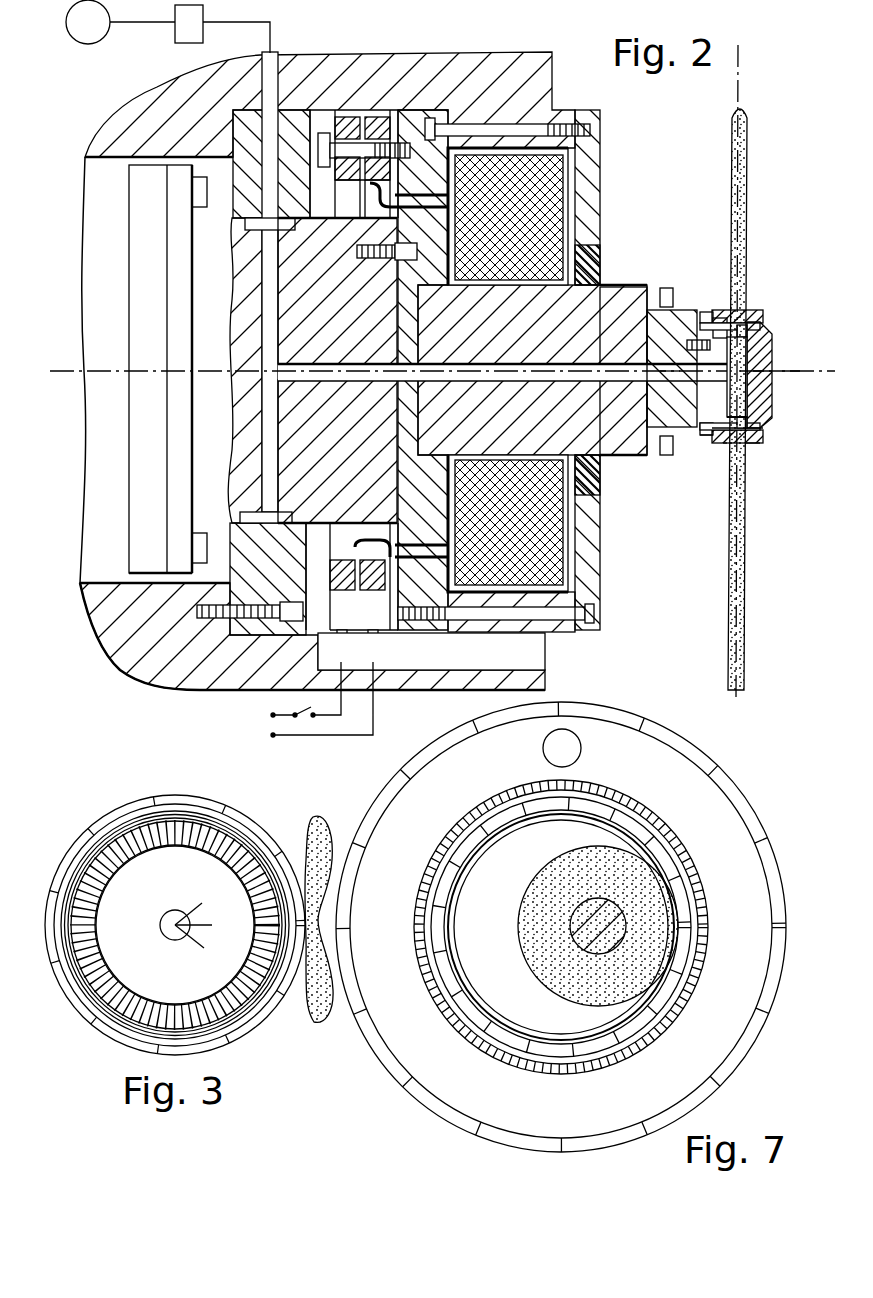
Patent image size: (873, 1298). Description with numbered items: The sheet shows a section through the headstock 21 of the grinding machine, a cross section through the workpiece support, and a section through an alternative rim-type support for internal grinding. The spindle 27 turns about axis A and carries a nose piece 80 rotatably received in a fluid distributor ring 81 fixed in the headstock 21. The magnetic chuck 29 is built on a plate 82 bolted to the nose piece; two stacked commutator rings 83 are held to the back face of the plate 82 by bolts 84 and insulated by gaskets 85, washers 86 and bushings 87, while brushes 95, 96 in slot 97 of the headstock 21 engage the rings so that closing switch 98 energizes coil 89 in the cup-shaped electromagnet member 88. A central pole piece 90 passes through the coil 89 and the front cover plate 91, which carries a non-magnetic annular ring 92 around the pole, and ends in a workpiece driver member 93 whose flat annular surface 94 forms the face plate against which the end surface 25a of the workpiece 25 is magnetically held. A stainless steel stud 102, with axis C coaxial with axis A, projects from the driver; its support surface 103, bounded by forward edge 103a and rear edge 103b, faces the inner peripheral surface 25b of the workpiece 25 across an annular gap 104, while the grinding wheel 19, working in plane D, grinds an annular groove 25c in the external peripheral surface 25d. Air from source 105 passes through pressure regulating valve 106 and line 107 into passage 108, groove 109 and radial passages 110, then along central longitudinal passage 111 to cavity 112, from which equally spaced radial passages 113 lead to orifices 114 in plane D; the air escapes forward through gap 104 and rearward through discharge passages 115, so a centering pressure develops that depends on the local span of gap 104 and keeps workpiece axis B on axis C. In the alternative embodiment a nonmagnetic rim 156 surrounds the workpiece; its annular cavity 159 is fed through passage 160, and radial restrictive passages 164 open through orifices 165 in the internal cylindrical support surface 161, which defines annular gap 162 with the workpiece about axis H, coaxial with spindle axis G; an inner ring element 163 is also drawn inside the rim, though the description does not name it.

In FIG. 2, the grinding wheel 19 is at (748, 135).
In FIG. 3, the grinding wheel 19 is at (313, 820).
In FIG. 2, the headstock 21 is at (90, 134).
In FIG. 2, the workpiece 25 is at (748, 313).
In FIG. 3, the workpiece 25 is at (238, 805).
In FIG. 2, the end surface 25a is at (711, 442).
In FIG. 2, the inner peripheral surface 25b is at (719, 323).
In FIG. 2, the annular groove 25c is at (747, 453).
In FIG. 3, the annular groove 25c is at (264, 822).
In FIG. 2, the external peripheral surface 25d is at (724, 445).
In FIG. 2, the spindle 27 is at (146, 577).
In FIG. 2, the magnetic chuck 29 is at (618, 466).
In FIG. 2, the nose piece 80 is at (352, 435).
In FIG. 2, the fluid distributor ring 81 is at (233, 124).
In FIG. 2, the plate 82 is at (413, 120).
In FIG. 2, the commutator rings 83 is at (362, 157).
In FIG. 2, the bolts 84 is at (322, 135).
In FIG. 2, the insulating gaskets 85 is at (388, 150).
In FIG. 2, the insulating washers 86 is at (335, 160).
In FIG. 2, the insulating bushings 87 is at (391, 164).
In FIG. 2, the electromagnet member 88 is at (488, 117).
In FIG. 2, the coil 89 is at (529, 283).
In FIG. 2, the pole piece 90 is at (603, 290).
In FIG. 2, the front cover plate 91 is at (602, 178).
In FIG. 2, the annular ring 92 is at (598, 253).
In FIG. 2, the workpiece driver member 93 is at (683, 312).
In FIG. 2, the flat annular surface 94 is at (723, 310).
In FIG. 2, the brush 95 is at (335, 645).
In FIG. 2, the brush 96 is at (380, 655).
In FIG. 2, the slot 97 is at (534, 656).
In FIG. 2, the switch 98 is at (304, 711).
In FIG. 2, the cylindrical stud 102 is at (774, 347).
In FIG. 3, the cylindrical stud 102 is at (85, 871).
In FIG. 2, the support surface 103 is at (761, 445).
In FIG. 3, the support surface 103 is at (131, 822).
In FIG. 2, the forward edge 103a is at (763, 430).
In FIG. 2, the rear edge 103b is at (700, 428).
In FIG. 2, the annular gap 104 is at (766, 319).
In FIG. 2, the source 105 is at (89, 22).
In FIG. 2, the pressure regulating valve 106 is at (176, 35).
In FIG. 2, the line 107 is at (270, 30).
In FIG. 2, the passage 108 is at (262, 108).
In FIG. 2, the annular groove 109 is at (291, 231).
In FIG. 2, the radial passages 110 is at (278, 304).
In FIG. 2, the central longitudinal passage 111 is at (464, 385).
In FIG. 2, the cavity 112 is at (739, 357).
In FIG. 3, the cavity 112 is at (175, 925).
In FIG. 2, the radial passages 113 is at (746, 420).
In FIG. 3, the radial passages 113 is at (119, 978).
In FIG. 2, the orifices 114 is at (740, 318).
In FIG. 3, the orifices 114 is at (84, 997).
In FIG. 2, the discharge passages 115 is at (713, 312).
In FIG. 7, the rim 156 is at (642, 732).
In FIG. 7, the annular cavity 159 is at (483, 763).
In FIG. 7, the passage 160 is at (582, 748).
In FIG. 7, the internal cylindrical support surface 161 is at (498, 821).
In FIG. 7, the annular gap 162 is at (443, 866).
In FIG. 7, the inner ring 163 is at (451, 887).
In FIG. 7, the restrictive passages 164 is at (600, 784).
In FIG. 7, the orifices 165 is at (601, 790).
In FIG. 2, the axis of rotation A is at (56, 371).
In FIG. 3, the axis of rotation A is at (196, 908).
In FIG. 2, the central longitudinal axis B is at (781, 375).
In FIG. 3, the central longitudinal axis B is at (201, 926).
In FIG. 2, the central longitudinal axis C is at (676, 378).
In FIG. 3, the central longitudinal axis C is at (197, 943).
In FIG. 2, the plane D is at (743, 85).
In FIG. 7, the axis G is at (569, 926).
In FIG. 7, the central longitudinal axis H is at (571, 935).